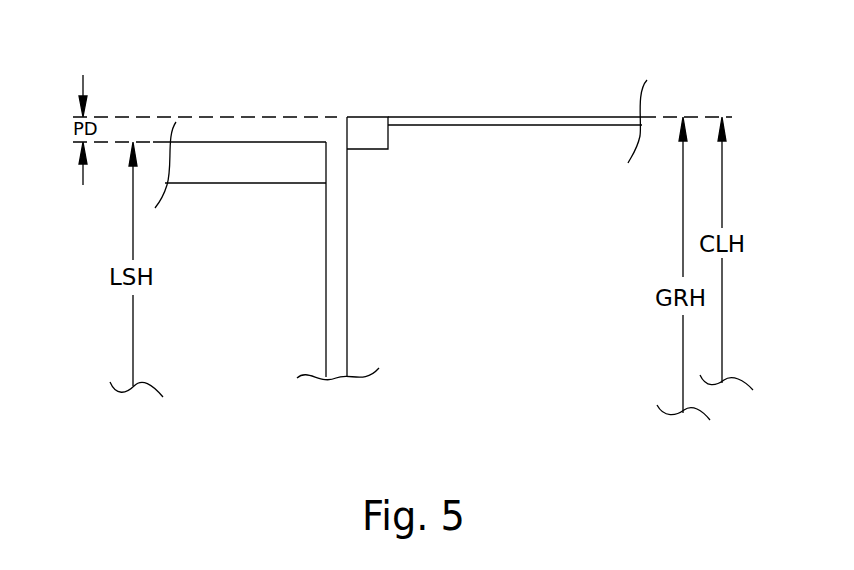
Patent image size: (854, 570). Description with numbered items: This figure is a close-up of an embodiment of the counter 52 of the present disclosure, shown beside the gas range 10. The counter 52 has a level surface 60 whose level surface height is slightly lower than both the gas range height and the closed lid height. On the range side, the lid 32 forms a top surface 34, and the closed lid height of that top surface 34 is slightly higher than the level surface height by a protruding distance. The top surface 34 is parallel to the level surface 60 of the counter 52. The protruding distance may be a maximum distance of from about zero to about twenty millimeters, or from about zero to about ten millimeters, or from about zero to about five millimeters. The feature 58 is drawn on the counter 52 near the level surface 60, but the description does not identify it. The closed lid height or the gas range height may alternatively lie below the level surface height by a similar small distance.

The patient support apparatus 10 is at (517, 172).
The lid 32 is at (510, 117).
The top surface 34 is at (570, 117).
The counter 52 is at (282, 260).
The upper rail surface 58 is at (233, 143).
The level surface 60 is at (270, 143).